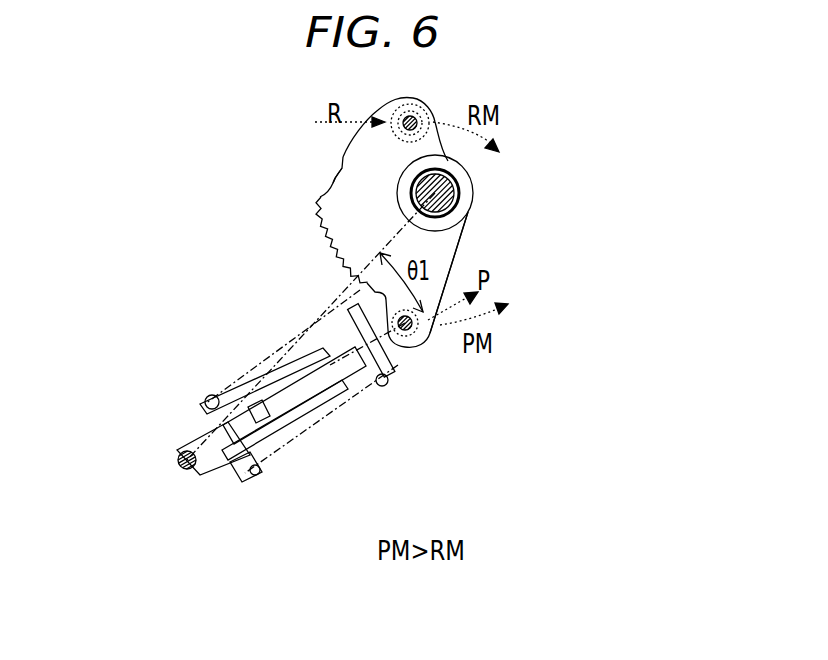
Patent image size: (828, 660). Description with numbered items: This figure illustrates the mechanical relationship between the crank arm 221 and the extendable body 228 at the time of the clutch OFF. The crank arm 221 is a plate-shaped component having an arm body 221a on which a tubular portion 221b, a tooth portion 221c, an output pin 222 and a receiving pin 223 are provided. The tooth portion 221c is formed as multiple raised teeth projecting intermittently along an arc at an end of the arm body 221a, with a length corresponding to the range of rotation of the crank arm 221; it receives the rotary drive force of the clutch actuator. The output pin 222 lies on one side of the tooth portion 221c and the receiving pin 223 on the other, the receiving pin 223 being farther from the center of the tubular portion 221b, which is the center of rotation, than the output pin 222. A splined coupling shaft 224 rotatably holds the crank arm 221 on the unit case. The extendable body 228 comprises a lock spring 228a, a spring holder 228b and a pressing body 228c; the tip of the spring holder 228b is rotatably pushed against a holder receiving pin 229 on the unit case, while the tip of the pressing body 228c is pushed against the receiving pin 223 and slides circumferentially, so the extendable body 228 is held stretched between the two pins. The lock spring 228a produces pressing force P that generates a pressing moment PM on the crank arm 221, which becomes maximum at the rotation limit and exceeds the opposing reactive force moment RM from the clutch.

The crank arm 221 is at (341, 156).
The arm body 221a is at (336, 174).
The tubular portion 221b is at (473, 182).
The tooth portion 221c is at (318, 216).
The output pin 222 is at (422, 104).
The receiving pin 223 is at (413, 340).
The coupling shaft 224 is at (417, 217).
The extendable body 228 is at (353, 348).
The lock spring 228a is at (320, 430).
The spring holder 228b is at (250, 478).
The pressing body 228c is at (398, 388).
The holder receiving pin 229 is at (178, 465).